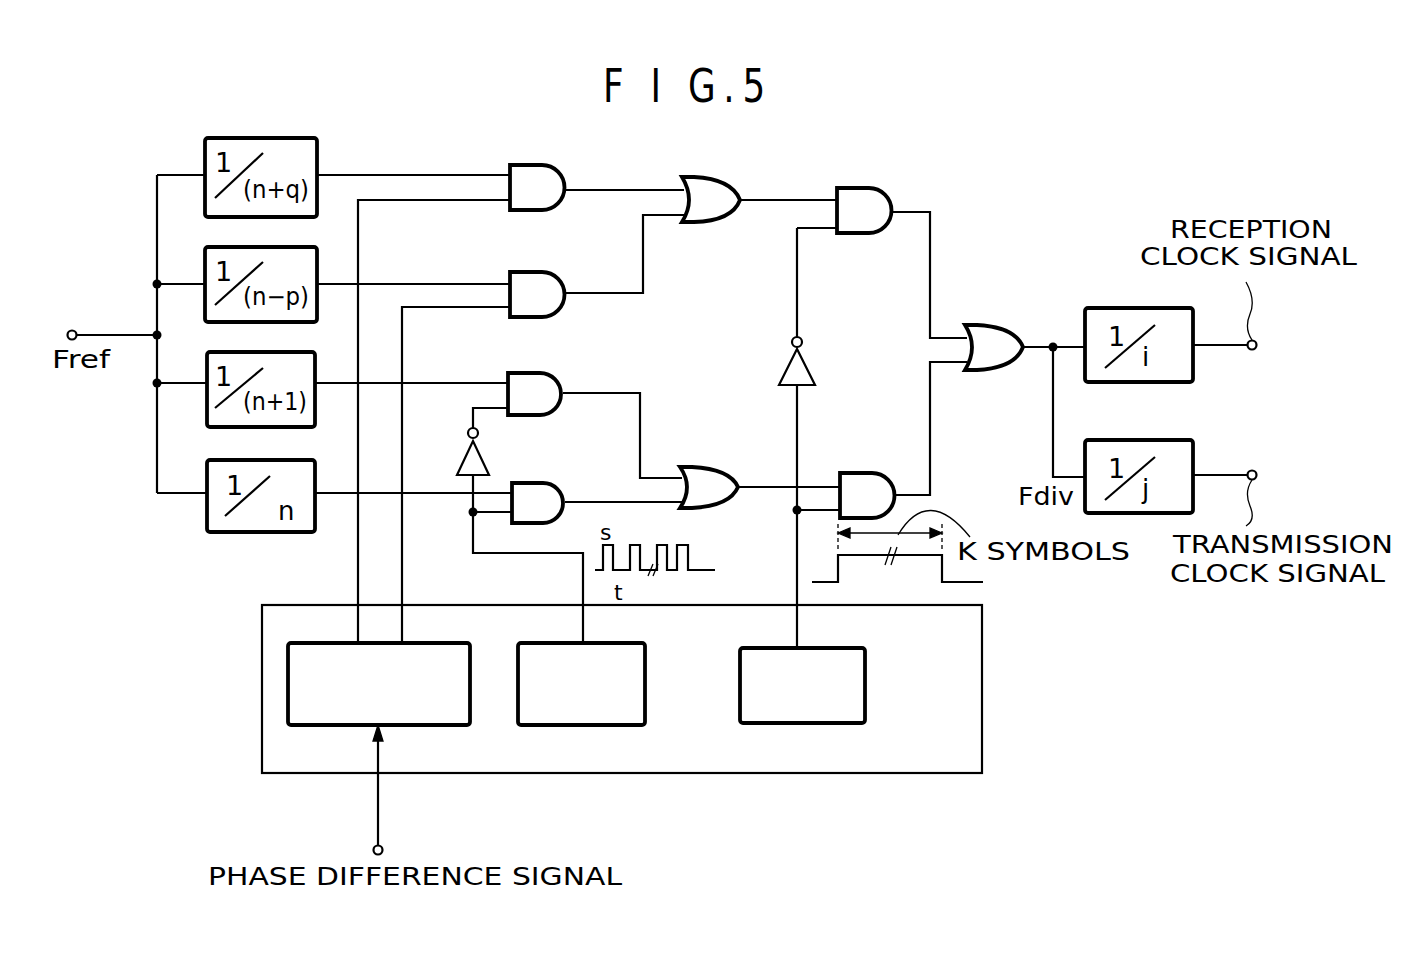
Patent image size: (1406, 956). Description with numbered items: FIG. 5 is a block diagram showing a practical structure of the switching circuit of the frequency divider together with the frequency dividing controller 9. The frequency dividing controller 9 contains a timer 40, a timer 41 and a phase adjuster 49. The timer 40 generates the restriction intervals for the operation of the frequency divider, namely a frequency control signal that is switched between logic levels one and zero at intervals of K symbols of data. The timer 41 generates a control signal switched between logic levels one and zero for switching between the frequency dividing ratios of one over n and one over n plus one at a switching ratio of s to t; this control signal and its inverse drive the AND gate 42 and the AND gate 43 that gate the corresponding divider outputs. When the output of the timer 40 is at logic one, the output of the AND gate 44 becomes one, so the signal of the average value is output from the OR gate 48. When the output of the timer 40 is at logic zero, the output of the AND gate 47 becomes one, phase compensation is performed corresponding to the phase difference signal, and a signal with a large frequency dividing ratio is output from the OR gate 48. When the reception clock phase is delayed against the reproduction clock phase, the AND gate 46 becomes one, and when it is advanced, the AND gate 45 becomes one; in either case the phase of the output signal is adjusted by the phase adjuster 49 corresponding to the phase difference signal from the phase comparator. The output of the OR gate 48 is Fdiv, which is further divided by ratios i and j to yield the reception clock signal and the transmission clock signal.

The frequency dividing controller 9 is at (982, 750).
The timer 40 is at (852, 622).
The timer 41 is at (631, 622).
The AND gate 42 is at (551, 374).
The AND gate 43 is at (551, 483).
The AND gate 44 is at (871, 473).
The AND gate 45 is at (548, 166).
The AND gate 46 is at (551, 273).
The AND gate 47 is at (871, 187).
The OR gate 48 is at (991, 325).
The phase adjuster 49 is at (442, 622).